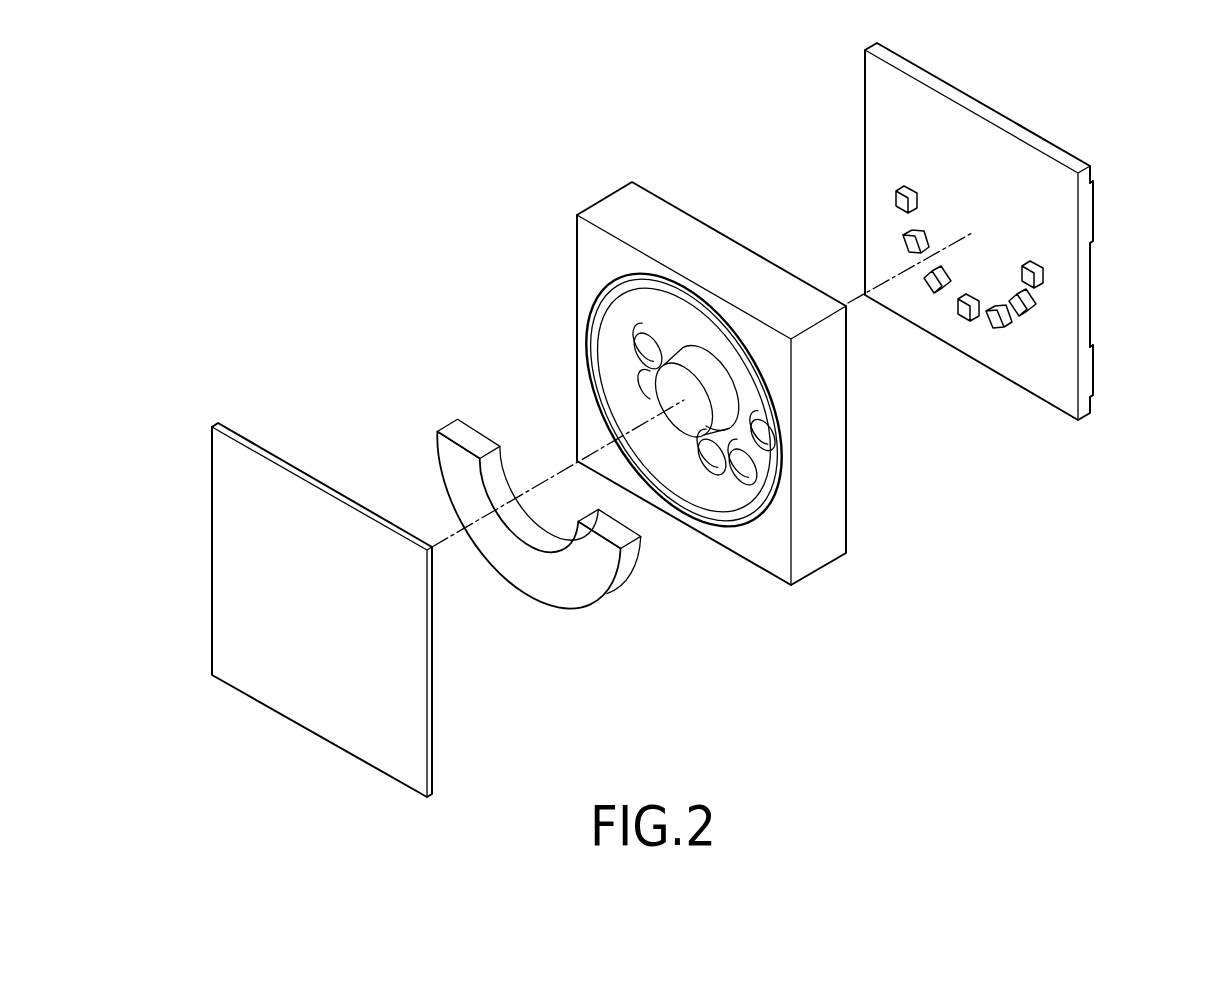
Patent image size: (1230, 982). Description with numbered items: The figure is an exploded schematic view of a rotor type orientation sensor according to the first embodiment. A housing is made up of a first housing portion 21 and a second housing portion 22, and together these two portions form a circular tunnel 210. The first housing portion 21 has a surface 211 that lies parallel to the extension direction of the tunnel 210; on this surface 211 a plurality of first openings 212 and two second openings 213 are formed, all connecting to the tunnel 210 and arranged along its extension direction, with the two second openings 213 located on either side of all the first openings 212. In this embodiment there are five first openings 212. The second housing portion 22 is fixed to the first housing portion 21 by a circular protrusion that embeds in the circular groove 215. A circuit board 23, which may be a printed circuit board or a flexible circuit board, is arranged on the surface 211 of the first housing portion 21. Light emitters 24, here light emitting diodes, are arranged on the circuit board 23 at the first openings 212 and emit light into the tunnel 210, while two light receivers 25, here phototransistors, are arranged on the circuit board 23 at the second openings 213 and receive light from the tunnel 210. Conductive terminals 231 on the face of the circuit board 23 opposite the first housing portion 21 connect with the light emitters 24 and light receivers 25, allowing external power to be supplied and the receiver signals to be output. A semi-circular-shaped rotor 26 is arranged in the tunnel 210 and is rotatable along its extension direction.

The first housing portion 21 is at (688, 351).
The surface 211 is at (660, 197).
The first openings 212 is at (683, 440).
The second openings 213 is at (647, 350).
The circular groove 215 is at (592, 300).
The circular tunnel 210 is at (604, 378).
The second housing portion 22 is at (293, 705).
The circuit board 23 is at (878, 102).
The conductive terminals 231 is at (1093, 207).
The light emitters 24 is at (905, 252).
The light receivers 25 is at (895, 203).
The rotor 26 is at (457, 480).